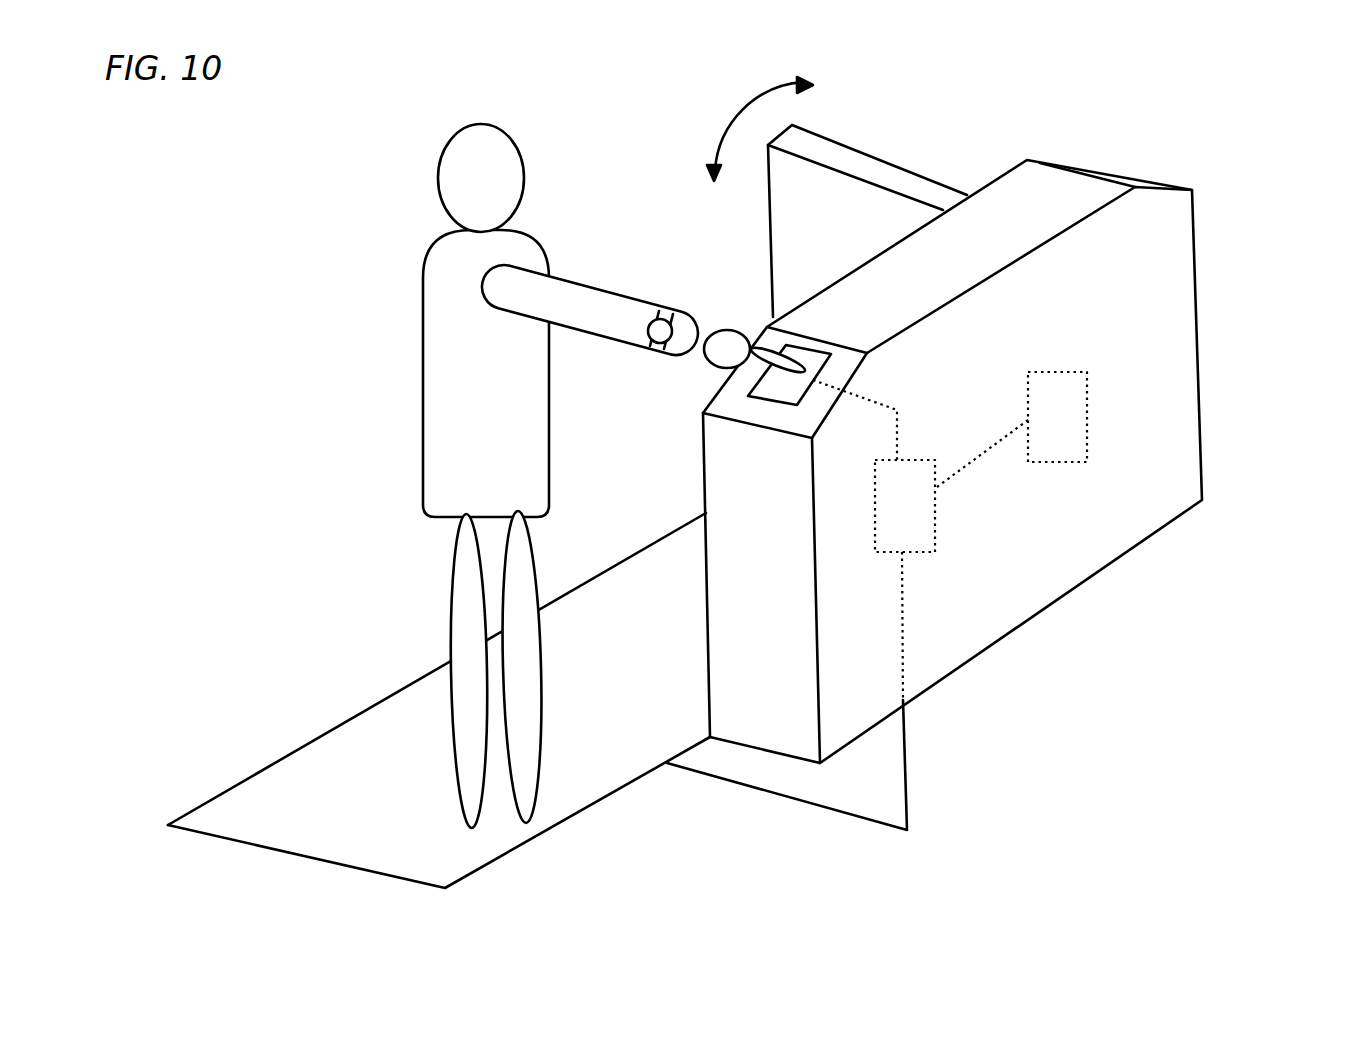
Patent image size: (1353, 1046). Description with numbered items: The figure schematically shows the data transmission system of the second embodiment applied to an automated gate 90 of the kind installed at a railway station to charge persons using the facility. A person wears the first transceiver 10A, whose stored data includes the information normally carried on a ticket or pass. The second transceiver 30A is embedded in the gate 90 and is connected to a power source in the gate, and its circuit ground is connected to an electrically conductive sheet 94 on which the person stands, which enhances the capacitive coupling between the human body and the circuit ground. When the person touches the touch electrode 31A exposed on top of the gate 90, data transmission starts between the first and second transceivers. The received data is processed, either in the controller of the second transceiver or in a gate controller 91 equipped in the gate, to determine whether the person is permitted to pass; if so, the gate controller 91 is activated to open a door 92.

The first transceiver 10A is at (662, 315).
The touch electrode 31A is at (752, 381).
The second transceiver 30A is at (935, 535).
The gate 90 is at (1202, 293).
The gate controller 91 is at (1087, 428).
The door 92 is at (883, 160).
The electrically conductive sheet 94 is at (288, 783).